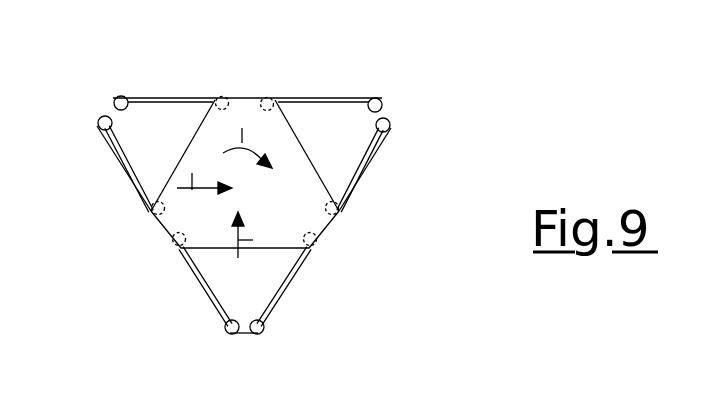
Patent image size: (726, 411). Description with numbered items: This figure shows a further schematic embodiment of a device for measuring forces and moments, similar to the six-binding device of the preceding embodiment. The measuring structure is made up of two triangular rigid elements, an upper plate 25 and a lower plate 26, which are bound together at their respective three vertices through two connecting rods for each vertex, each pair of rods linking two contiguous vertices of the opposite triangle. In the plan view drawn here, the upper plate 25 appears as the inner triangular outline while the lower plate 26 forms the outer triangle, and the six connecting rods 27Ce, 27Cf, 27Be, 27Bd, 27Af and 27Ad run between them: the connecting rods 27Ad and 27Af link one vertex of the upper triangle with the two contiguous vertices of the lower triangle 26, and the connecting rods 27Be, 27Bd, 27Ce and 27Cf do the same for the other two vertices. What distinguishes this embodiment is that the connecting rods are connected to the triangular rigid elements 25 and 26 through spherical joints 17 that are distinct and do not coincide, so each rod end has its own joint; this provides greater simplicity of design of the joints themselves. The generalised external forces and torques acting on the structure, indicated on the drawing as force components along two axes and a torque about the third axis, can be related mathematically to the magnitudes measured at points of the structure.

The spherical joints 17 is at (101, 118).
The upper plate 25 is at (291, 206).
The lower plate 26 is at (370, 154).
The connecting rod 27Ce is at (168, 98).
The connecting rod 27Cf is at (333, 98).
The connecting rod 27Be is at (123, 166).
The connecting rod 27Bd is at (205, 292).
The connecting rod 27Af is at (347, 187).
The connecting rod 27Ad is at (286, 285).